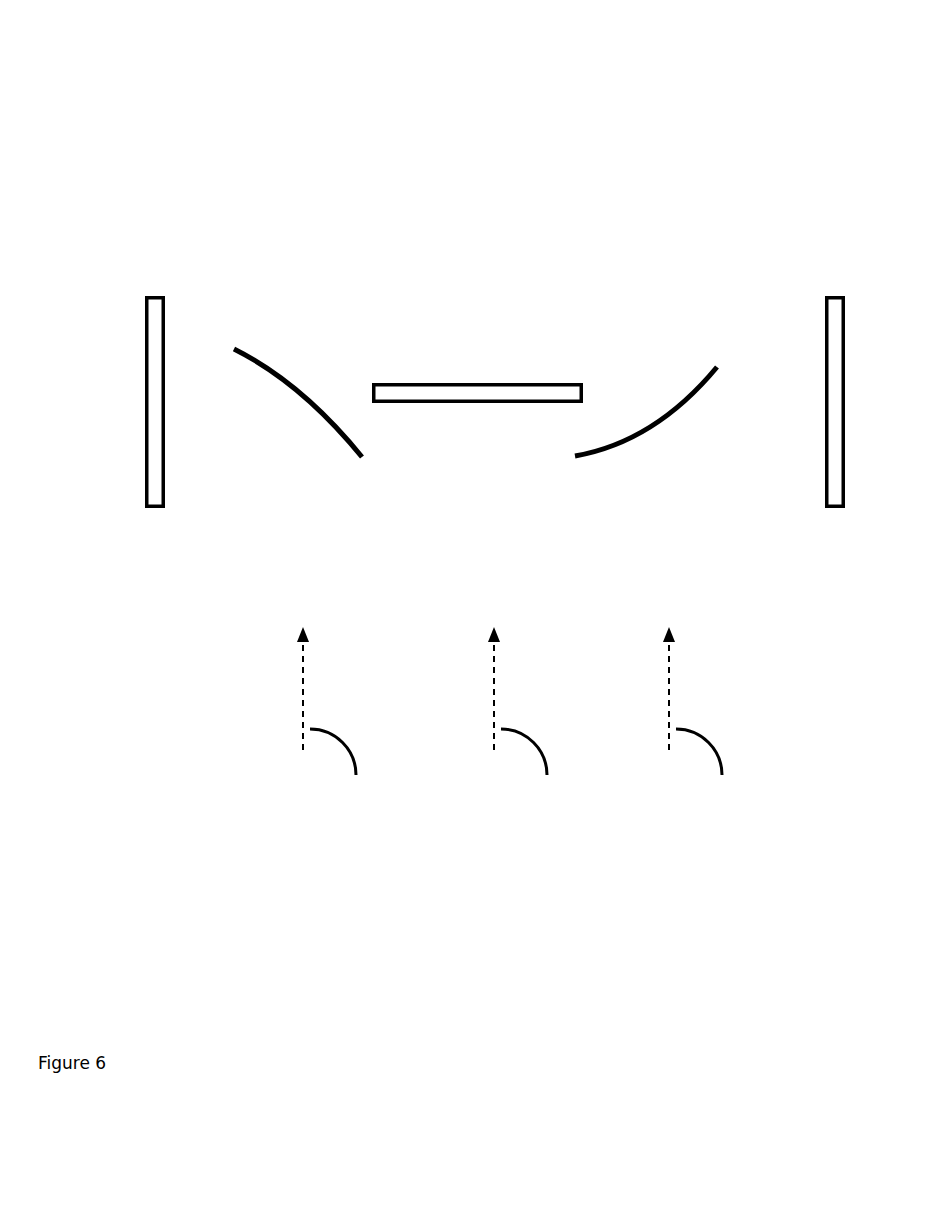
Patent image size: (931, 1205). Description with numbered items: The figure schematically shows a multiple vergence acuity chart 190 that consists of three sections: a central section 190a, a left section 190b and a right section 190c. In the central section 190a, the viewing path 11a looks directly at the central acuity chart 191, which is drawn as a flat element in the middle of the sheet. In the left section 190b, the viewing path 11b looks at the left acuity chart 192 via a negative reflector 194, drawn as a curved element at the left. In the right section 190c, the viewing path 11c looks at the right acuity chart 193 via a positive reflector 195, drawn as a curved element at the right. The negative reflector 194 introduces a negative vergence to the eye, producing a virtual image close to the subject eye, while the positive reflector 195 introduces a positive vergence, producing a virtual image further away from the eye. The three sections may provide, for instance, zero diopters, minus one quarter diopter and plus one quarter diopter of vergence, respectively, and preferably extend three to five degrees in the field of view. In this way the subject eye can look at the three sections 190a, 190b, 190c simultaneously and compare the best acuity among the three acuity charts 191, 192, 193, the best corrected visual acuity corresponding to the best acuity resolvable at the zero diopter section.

The multiple vergence acuity chart 190 is at (184, 94).
The central section 190a is at (478, 378).
The left section 190b is at (298, 360).
The right section 190c is at (646, 360).
The central acuity chart 191 is at (525, 383).
The left acuity chart 192 is at (159, 295).
The right acuity chart 193 is at (838, 295).
The negative reflector 194 is at (260, 352).
The positive reflector 195 is at (700, 385).
The viewing path 11a is at (517, 719).
The viewing path 11b is at (326, 719).
The viewing path 11c is at (692, 719).